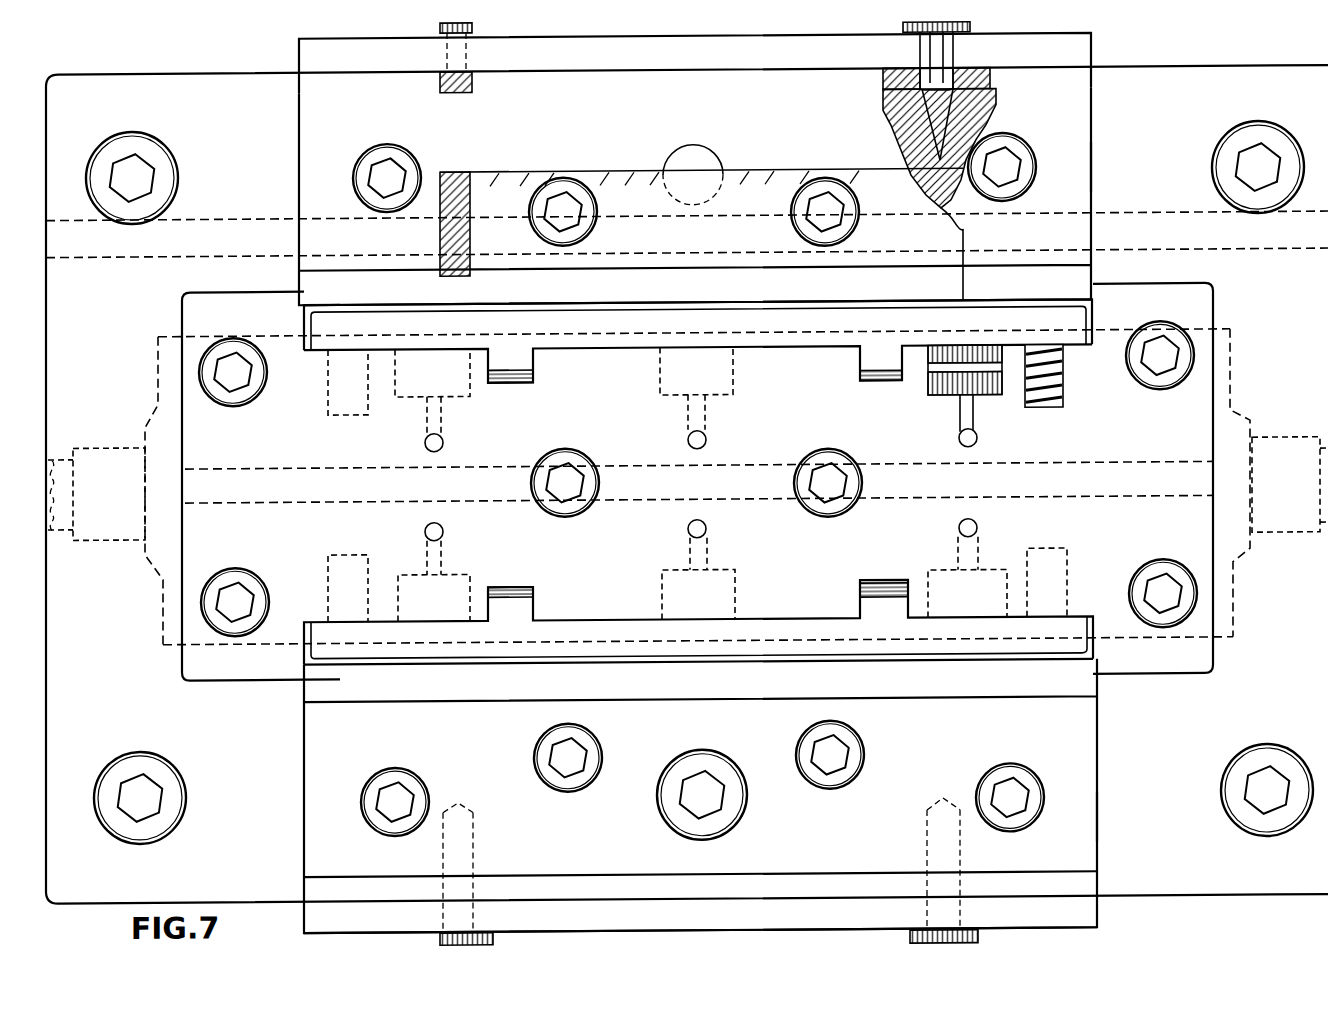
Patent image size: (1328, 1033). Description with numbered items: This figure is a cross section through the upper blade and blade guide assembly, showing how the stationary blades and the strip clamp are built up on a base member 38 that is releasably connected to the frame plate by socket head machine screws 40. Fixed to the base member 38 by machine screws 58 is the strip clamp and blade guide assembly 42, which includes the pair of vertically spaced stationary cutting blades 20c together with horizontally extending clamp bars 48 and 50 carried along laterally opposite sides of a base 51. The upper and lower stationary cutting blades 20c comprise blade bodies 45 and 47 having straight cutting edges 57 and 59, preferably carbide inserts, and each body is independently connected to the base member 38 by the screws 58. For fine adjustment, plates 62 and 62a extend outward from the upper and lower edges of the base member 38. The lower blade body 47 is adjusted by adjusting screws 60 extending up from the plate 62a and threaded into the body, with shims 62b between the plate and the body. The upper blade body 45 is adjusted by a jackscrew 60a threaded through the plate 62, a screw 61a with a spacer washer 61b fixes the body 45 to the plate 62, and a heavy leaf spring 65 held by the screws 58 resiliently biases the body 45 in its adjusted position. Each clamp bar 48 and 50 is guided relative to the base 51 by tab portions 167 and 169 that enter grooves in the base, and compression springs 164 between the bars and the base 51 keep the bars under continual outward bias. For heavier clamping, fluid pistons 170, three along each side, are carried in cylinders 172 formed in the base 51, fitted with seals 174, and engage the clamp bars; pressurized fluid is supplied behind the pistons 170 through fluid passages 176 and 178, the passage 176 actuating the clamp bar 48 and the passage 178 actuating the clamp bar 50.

The base member 38 is at (58, 115).
The socket head machine screws 40 is at (125, 143).
The strip clamp and blade guide assembly 42 is at (1190, 412).
The blade body 45 is at (1078, 112).
The blade body 47 is at (1075, 731).
The clamp bar 48 is at (770, 332).
The clamp bar 50 is at (748, 636).
The base 51 is at (202, 314).
The cutting edge 57 is at (322, 292).
The machine screws 58 is at (398, 156).
The cutting edge 59 is at (322, 684).
The adjusting screws 60 is at (490, 941).
The jackscrew 60a is at (436, 31).
The screw 61a is at (957, 45).
The spacer washer 61b is at (985, 86).
The plate 62 is at (1092, 61).
The plate 62a is at (673, 929).
The shims 62b is at (347, 894).
The leaf spring 65 is at (645, 172).
The stationary cutting blades 20c is at (1070, 188).
The compression springs 164 is at (350, 384).
The tab portion 167 is at (518, 364).
The tab portion 169 is at (520, 614).
The fluid pistons 170 is at (425, 389).
The cylinders 172 is at (470, 378).
The seals 174 is at (965, 364).
The fluid passage 176 is at (443, 444).
The fluid passage 178 is at (427, 529).